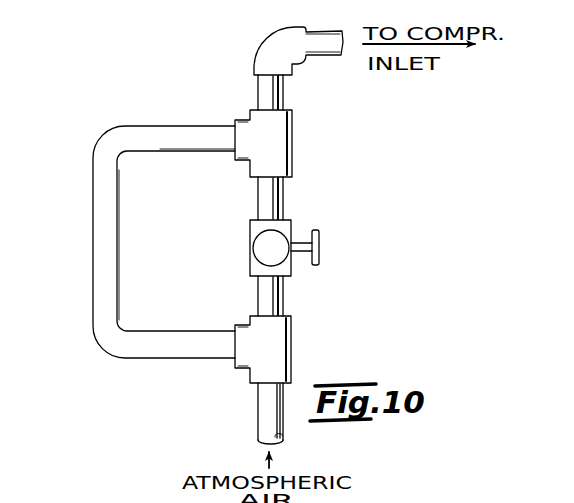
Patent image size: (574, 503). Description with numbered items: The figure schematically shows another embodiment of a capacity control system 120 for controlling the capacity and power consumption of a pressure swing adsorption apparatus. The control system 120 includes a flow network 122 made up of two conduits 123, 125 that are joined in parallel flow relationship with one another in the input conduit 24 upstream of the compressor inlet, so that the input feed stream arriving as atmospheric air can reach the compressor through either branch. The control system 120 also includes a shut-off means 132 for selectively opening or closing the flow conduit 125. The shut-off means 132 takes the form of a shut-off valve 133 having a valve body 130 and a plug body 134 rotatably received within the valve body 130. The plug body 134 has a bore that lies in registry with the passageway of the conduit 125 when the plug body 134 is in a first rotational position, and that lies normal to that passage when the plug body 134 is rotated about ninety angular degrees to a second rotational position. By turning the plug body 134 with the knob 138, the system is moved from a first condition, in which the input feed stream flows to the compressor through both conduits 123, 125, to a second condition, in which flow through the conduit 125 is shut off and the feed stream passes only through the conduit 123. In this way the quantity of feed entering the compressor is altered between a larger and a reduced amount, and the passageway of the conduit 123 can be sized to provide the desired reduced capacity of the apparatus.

The input conduit 24 is at (270, 85).
The capacity control system 120 is at (368, 191).
The flow network 122 is at (88, 206).
The conduit 123 is at (100, 263).
The flow conduit 125 is at (280, 198).
The valve body 130 is at (250, 250).
The shut-off means 132 is at (328, 246).
The shut-off valve 133 is at (250, 238).
The plug body 134 is at (301, 243).
The knob 138 is at (320, 250).